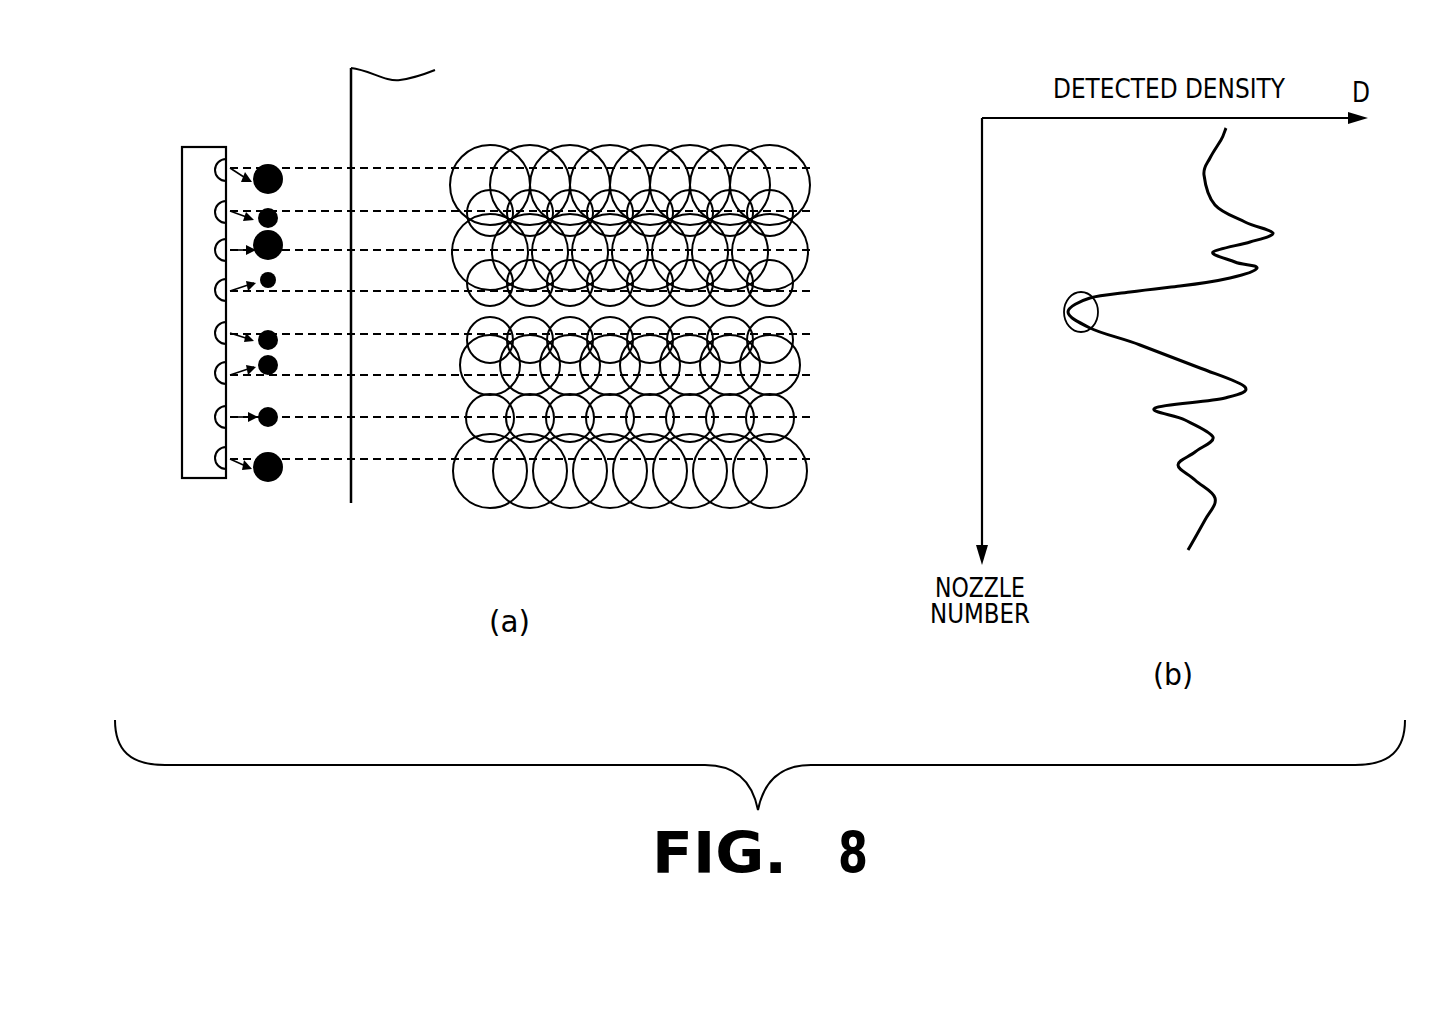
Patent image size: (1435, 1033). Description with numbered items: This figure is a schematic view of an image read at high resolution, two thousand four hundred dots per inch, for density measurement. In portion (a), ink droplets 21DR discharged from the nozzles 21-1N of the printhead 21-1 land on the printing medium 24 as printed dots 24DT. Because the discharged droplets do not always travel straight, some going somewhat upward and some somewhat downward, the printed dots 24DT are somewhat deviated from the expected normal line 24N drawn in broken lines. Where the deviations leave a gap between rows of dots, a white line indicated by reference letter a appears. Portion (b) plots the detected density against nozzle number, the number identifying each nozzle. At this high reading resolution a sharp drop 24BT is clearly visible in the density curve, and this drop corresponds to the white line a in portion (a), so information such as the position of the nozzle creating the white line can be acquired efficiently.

The printhead 21-1 is at (192, 147).
The nozzles 21-1N is at (220, 147).
The ink droplets 21DR is at (272, 163).
The printing medium 24 is at (372, 68).
The expected normal line 24N is at (403, 165).
The printed dots 24DT is at (490, 143).
The sharp drop 24BT is at (1085, 292).
The white line a is at (783, 313).